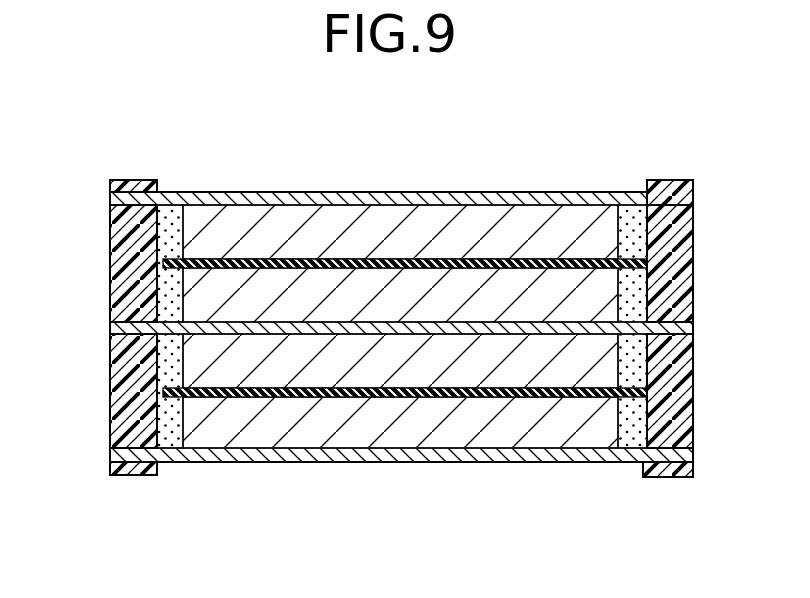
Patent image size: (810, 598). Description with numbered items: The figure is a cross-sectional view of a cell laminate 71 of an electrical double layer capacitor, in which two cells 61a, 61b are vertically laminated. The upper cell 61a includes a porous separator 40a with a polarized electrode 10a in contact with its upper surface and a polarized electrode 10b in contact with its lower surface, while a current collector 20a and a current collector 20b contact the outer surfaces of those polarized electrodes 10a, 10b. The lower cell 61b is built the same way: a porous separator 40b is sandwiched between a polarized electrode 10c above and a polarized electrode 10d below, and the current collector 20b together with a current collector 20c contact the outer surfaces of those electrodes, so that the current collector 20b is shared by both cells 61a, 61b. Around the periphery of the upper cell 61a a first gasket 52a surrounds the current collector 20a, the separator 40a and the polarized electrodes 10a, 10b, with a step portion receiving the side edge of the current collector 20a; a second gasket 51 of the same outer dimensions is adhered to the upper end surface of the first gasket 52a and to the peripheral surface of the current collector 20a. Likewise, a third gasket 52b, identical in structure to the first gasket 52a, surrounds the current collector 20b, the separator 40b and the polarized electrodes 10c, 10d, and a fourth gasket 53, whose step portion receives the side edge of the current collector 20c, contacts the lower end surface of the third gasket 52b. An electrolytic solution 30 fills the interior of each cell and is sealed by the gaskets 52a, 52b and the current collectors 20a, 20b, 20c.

The cell laminate 71 is at (607, 110).
The polarized electrode 10a is at (340, 215).
The polarized electrode 10b is at (475, 300).
The polarized electrode 10c is at (322, 370).
The polarized electrode 10d is at (453, 440).
The current collector 20a is at (672, 200).
The current collector 20b is at (672, 328).
The current collector 20c is at (672, 456).
The electrolytic solution 30 is at (176, 215).
The porous separator 40a is at (650, 261).
The porous separator 40b is at (650, 393).
The second gasket 51 is at (655, 180).
The first gasket 52a is at (688, 280).
The third gasket 52b is at (688, 420).
The fourth gasket 53 is at (672, 478).
The cell 61a is at (100, 197).
The cell 61b is at (100, 333).